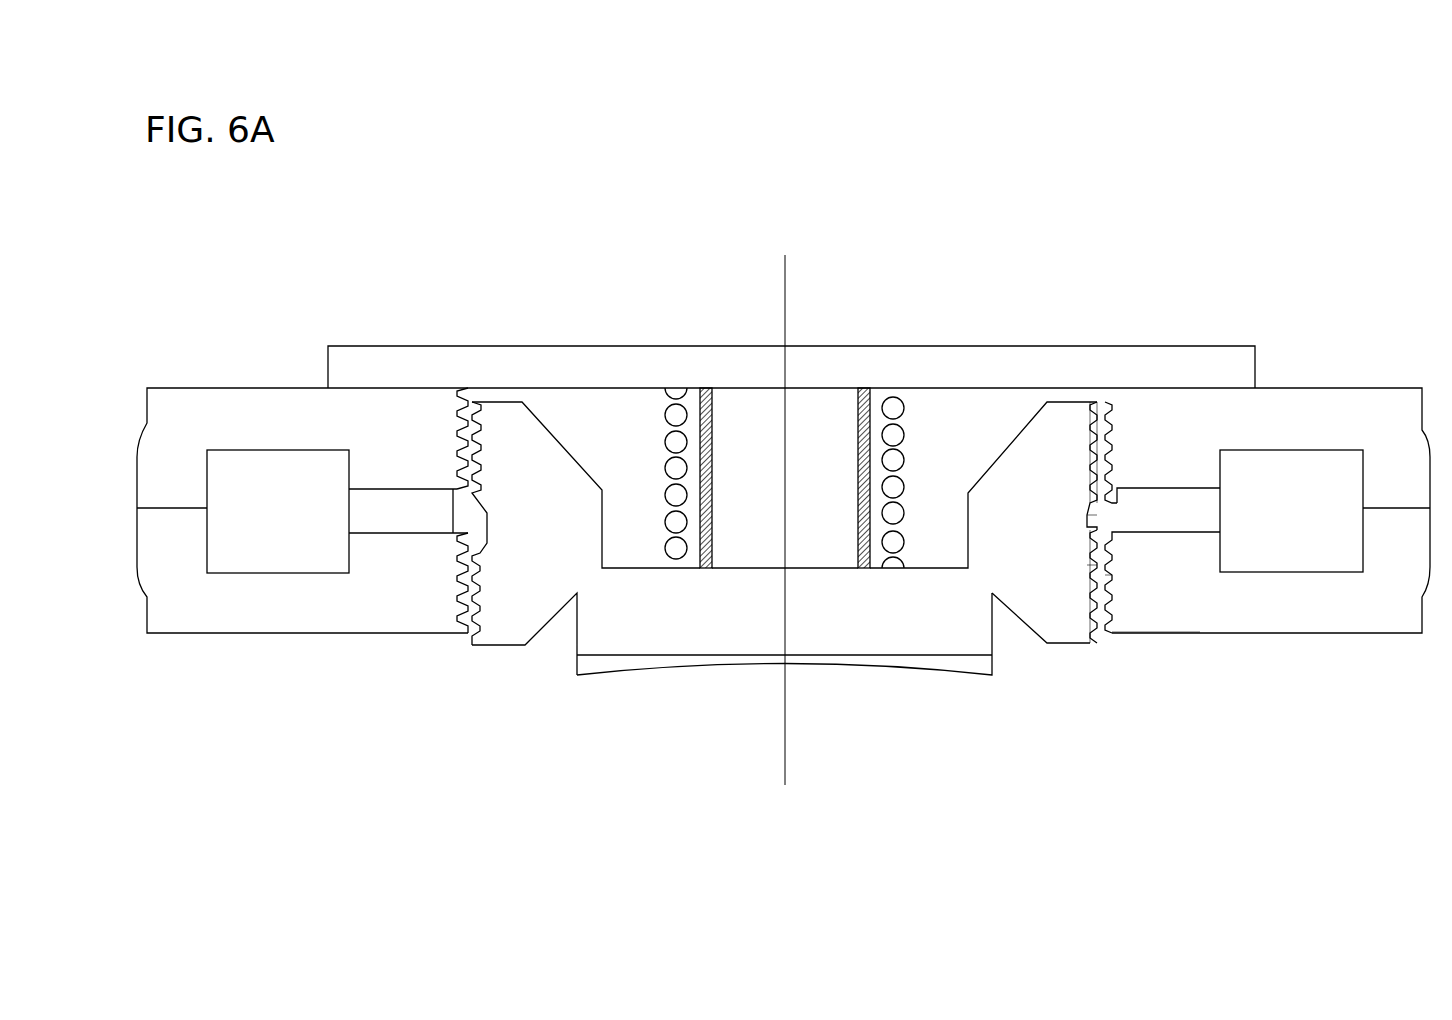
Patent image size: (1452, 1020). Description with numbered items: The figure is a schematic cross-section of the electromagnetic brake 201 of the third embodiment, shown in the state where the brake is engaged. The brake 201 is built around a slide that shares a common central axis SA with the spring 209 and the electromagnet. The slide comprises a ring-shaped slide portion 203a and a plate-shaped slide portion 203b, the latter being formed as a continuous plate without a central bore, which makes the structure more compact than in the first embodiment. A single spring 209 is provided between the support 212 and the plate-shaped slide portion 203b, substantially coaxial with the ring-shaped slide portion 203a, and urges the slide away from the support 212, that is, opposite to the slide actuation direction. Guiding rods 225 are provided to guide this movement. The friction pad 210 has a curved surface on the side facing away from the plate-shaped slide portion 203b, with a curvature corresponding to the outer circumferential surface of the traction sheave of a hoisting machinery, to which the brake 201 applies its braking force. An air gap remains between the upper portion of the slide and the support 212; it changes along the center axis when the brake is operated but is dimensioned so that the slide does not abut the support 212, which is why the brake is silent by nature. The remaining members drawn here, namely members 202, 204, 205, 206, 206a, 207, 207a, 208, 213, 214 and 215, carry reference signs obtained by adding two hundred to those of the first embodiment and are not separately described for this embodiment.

The electromagnetic brake 201 is at (1097, 200).
The housing 202 is at (1328, 366).
The ring-shaped slide portion 203a is at (1075, 632).
The plate-shaped slide portion 203b is at (963, 635).
The shoulder 204 is at (1107, 603).
The connector block 205 is at (1314, 552).
The upper threaded portion 206 is at (1102, 410).
The thread flank 206a is at (1108, 430).
The lower threaded portion 207 is at (1095, 620).
The thread flank 207a is at (1090, 622).
The connecting shaft 208 is at (1188, 507).
The spring 209 is at (888, 400).
The friction pad 210 is at (905, 663).
The support 212 is at (958, 363).
The stop face 213 is at (1107, 575).
The groove 214 is at (1098, 525).
The sealing lip 215 is at (1090, 520).
The guiding rods 225 is at (865, 398).
The sensor axis SA is at (781, 507).